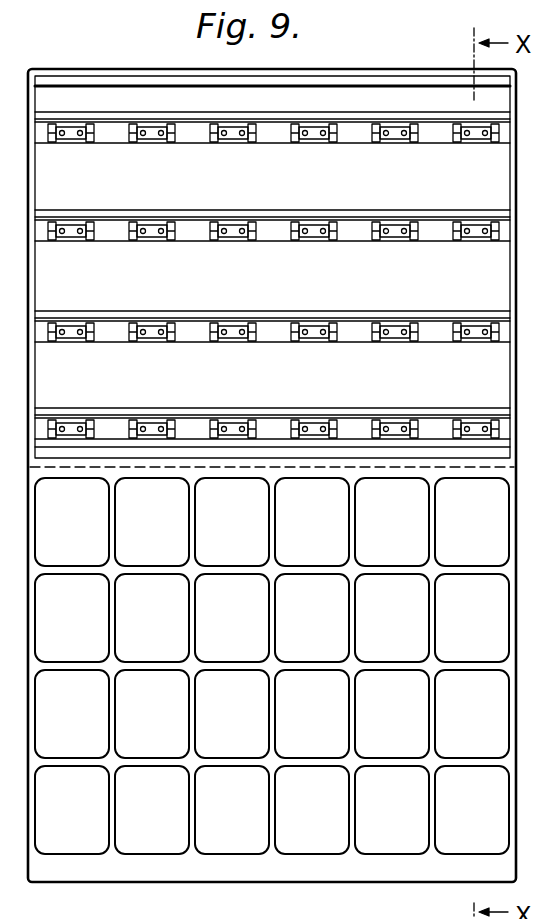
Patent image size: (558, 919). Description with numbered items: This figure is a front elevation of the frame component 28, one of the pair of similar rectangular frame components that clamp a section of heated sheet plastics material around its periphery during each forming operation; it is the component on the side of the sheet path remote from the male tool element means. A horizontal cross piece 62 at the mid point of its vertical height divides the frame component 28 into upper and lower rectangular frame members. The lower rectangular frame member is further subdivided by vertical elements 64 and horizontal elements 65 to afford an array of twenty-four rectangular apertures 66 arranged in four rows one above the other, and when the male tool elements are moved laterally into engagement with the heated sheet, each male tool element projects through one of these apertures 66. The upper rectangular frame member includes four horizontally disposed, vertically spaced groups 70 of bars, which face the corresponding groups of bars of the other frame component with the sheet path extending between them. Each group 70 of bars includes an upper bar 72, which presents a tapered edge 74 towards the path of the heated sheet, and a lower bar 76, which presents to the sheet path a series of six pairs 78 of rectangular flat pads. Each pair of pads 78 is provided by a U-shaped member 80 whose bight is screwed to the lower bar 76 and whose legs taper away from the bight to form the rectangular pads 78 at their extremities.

The frame component 28 is at (35, 372).
The horizontal cross piece 62 is at (75, 468).
The vertical elements 64 is at (117, 497).
The horizontal elements 65 is at (152, 660).
The rectangular apertures 66 is at (162, 728).
The groups of bars 70 is at (57, 211).
The upper bar 72 is at (181, 211).
The tapered edge 74 is at (293, 223).
The lower bar 76 is at (193, 237).
The pairs of rectangular flat pads 78 is at (336, 316).
The U-shaped member 80 is at (150, 227).